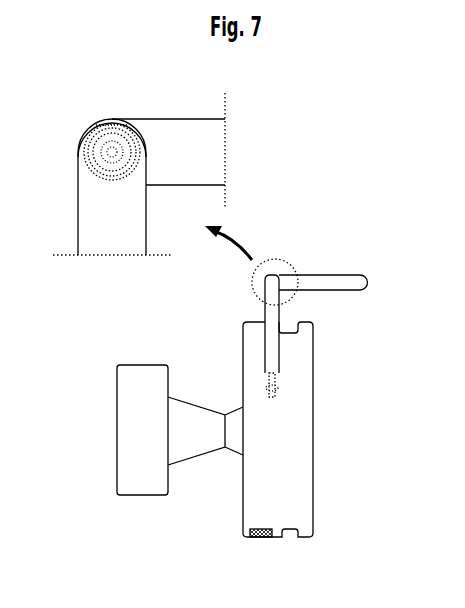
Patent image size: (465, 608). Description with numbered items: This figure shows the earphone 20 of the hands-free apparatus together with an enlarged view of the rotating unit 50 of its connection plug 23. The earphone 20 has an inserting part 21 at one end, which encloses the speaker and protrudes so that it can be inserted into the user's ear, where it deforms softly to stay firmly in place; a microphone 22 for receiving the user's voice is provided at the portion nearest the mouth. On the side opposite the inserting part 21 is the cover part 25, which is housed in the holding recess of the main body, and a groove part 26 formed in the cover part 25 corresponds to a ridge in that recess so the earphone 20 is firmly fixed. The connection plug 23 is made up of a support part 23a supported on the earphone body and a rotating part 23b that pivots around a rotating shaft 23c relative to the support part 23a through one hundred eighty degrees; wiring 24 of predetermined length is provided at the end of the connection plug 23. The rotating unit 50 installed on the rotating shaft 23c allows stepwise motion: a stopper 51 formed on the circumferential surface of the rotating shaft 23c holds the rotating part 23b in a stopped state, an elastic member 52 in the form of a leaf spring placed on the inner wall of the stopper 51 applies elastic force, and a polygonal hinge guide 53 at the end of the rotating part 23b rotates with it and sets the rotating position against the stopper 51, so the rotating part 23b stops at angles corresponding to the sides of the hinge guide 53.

The earphone 20 is at (272, 440).
The inserting part 21 is at (125, 430).
The microphone 22 is at (260, 542).
The connection plug 23 is at (196, 113).
The support part 23a is at (77, 212).
The rotating part 23b is at (155, 118).
The rotating shaft 23c is at (82, 145).
The wiring 24 is at (280, 386).
The cover part 25 is at (315, 437).
The groove part 26 is at (290, 532).
The rotating unit 50 is at (80, 122).
The stopper 51 is at (102, 117).
The elastic member 52 is at (100, 177).
The hinge guide 53 is at (93, 160).